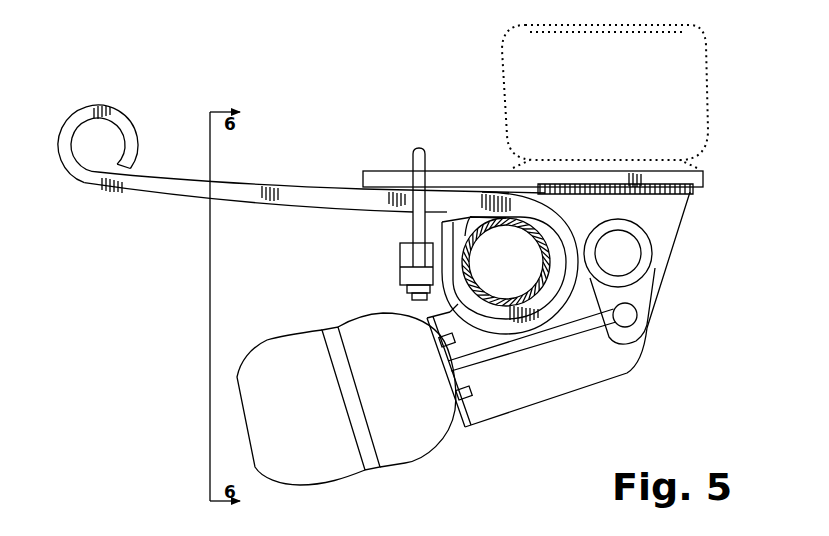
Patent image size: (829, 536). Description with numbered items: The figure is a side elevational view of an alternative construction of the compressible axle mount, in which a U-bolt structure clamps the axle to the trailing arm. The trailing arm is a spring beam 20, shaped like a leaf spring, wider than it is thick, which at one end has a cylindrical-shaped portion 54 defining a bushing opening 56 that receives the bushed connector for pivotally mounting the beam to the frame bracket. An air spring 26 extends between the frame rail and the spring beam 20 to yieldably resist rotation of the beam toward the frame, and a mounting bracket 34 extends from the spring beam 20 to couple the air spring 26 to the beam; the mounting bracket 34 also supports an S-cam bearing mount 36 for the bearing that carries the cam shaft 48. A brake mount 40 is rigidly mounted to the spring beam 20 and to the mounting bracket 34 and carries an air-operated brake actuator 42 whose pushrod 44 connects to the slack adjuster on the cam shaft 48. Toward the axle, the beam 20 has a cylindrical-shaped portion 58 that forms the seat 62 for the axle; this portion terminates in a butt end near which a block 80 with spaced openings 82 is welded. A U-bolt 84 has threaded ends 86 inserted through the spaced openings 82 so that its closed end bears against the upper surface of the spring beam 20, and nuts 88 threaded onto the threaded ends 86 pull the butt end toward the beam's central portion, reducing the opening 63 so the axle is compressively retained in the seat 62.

The spring beam 20 is at (250, 180).
The air spring 26 is at (702, 38).
The mounting bracket 34 is at (648, 345).
The S-cam bearing mount 36 is at (638, 287).
The brake mount 40 is at (466, 427).
The air-operated brake actuator 42 is at (272, 340).
The pushrod 44 is at (580, 337).
The cam shaft 48 is at (638, 242).
The cylindrical-shaped portion 54 is at (70, 122).
The bushing opening 56 is at (90, 156).
The cylindrical-shaped portion 58 is at (540, 315).
The seat 62 is at (512, 305).
The opening 63 is at (478, 216).
The block 80 is at (400, 260).
The spaced openings 82 is at (405, 268).
The U-bolt 84 is at (423, 150).
The threaded ends 86 is at (420, 222).
The nuts 88 is at (407, 289).